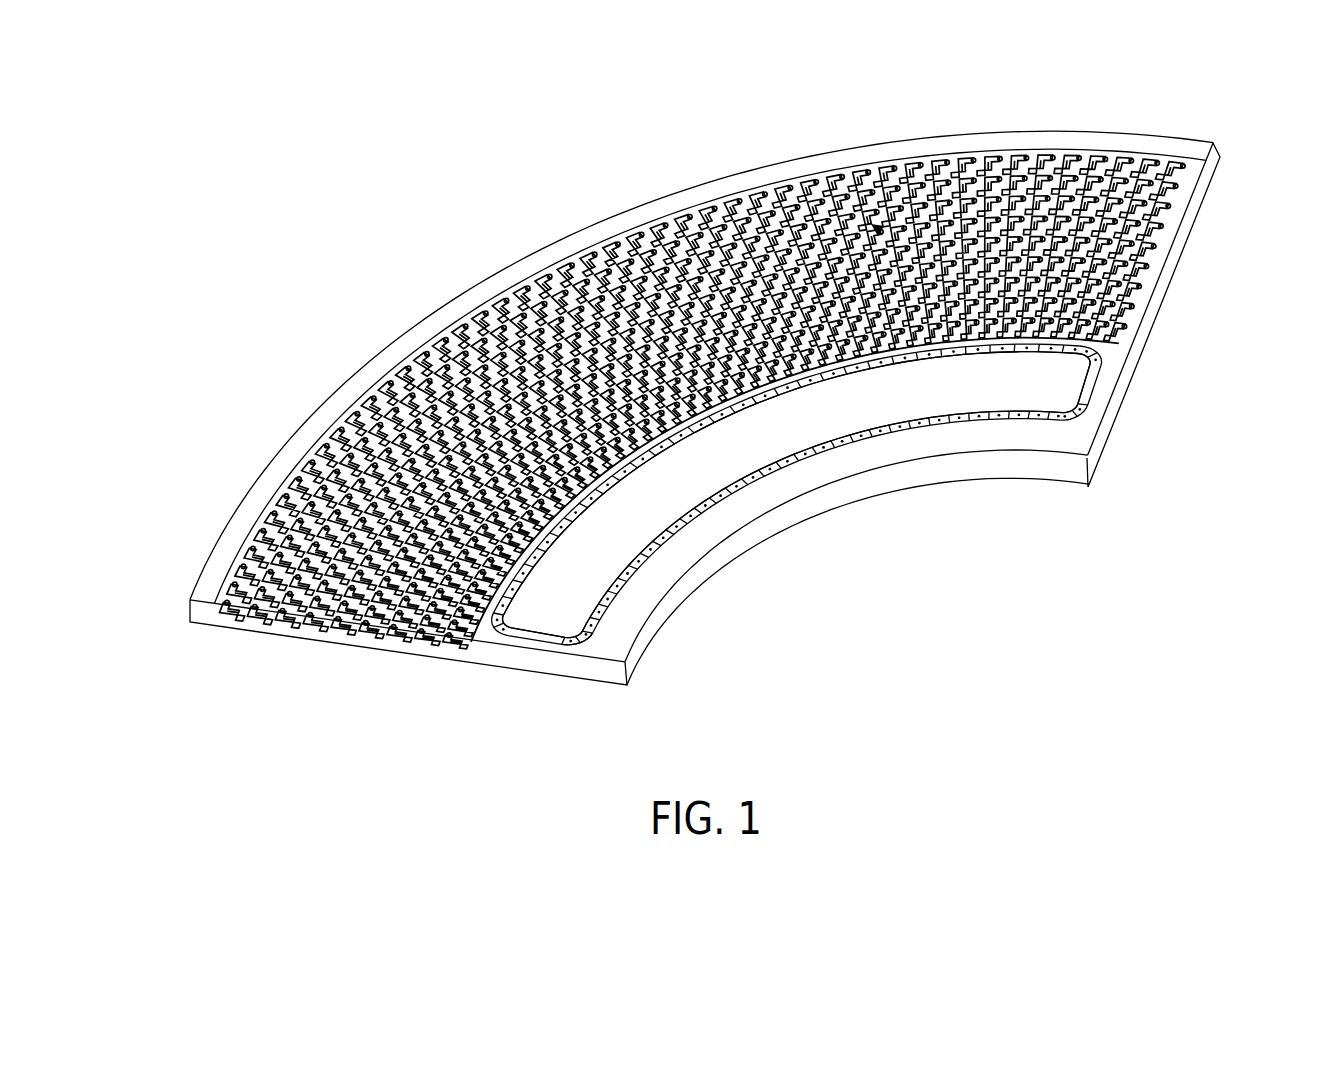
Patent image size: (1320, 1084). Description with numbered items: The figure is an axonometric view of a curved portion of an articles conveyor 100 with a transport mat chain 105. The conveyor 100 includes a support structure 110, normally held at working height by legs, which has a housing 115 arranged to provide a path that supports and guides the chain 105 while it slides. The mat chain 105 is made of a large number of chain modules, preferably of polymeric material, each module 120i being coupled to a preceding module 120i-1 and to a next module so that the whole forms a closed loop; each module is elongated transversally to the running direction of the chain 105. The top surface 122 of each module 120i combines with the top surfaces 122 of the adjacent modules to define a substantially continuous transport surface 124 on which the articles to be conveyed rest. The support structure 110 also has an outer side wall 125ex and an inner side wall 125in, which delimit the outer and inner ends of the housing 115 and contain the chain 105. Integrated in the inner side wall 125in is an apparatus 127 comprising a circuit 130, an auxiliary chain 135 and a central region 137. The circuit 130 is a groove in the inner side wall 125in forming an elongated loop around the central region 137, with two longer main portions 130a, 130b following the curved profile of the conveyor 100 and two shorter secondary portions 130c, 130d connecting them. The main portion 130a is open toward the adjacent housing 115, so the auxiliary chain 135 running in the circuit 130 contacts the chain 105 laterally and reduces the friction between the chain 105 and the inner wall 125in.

The conveyor 100 is at (276, 338).
The transport mat chain 105 is at (762, 211).
The support structure 110 is at (449, 674).
The housing 115 is at (1178, 250).
The preceding chain module 120i-1 is at (605, 250).
The chain module 120i is at (620, 237).
The top surface 122 is at (1195, 168).
The transport surface 124 is at (923, 170).
The outer side wall 125ex is at (290, 460).
The inner side wall 125in is at (1118, 393).
The apparatus 127 is at (528, 652).
The circuit 130 is at (677, 537).
The main portion 130a is at (707, 420).
The main portion 130b is at (883, 437).
The secondary portion 130c is at (1090, 403).
The secondary portion 130d is at (557, 630).
The auxiliary chain 135 is at (853, 447).
The central region 137 is at (980, 387).